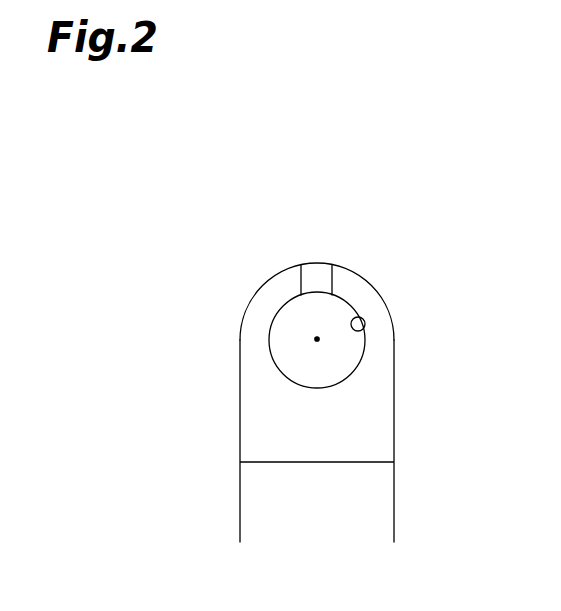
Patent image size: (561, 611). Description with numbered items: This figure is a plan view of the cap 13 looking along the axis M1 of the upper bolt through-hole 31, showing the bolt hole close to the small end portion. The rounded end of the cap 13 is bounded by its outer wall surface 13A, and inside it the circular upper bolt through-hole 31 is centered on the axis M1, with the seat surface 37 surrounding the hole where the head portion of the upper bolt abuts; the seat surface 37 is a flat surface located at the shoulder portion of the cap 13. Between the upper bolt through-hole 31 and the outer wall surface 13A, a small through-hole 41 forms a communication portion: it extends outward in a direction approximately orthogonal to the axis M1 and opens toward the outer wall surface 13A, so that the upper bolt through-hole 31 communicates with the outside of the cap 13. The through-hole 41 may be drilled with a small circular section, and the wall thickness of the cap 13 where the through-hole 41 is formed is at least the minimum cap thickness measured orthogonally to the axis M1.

The cap 13 is at (411, 258).
The outer wall surface 13A is at (260, 287).
The upper bolt through-hole 31 is at (365, 331).
The seat surface 37 is at (365, 365).
The through-hole 41 is at (316, 282).
The axis of the upper bolt through-hole M1 is at (315, 339).